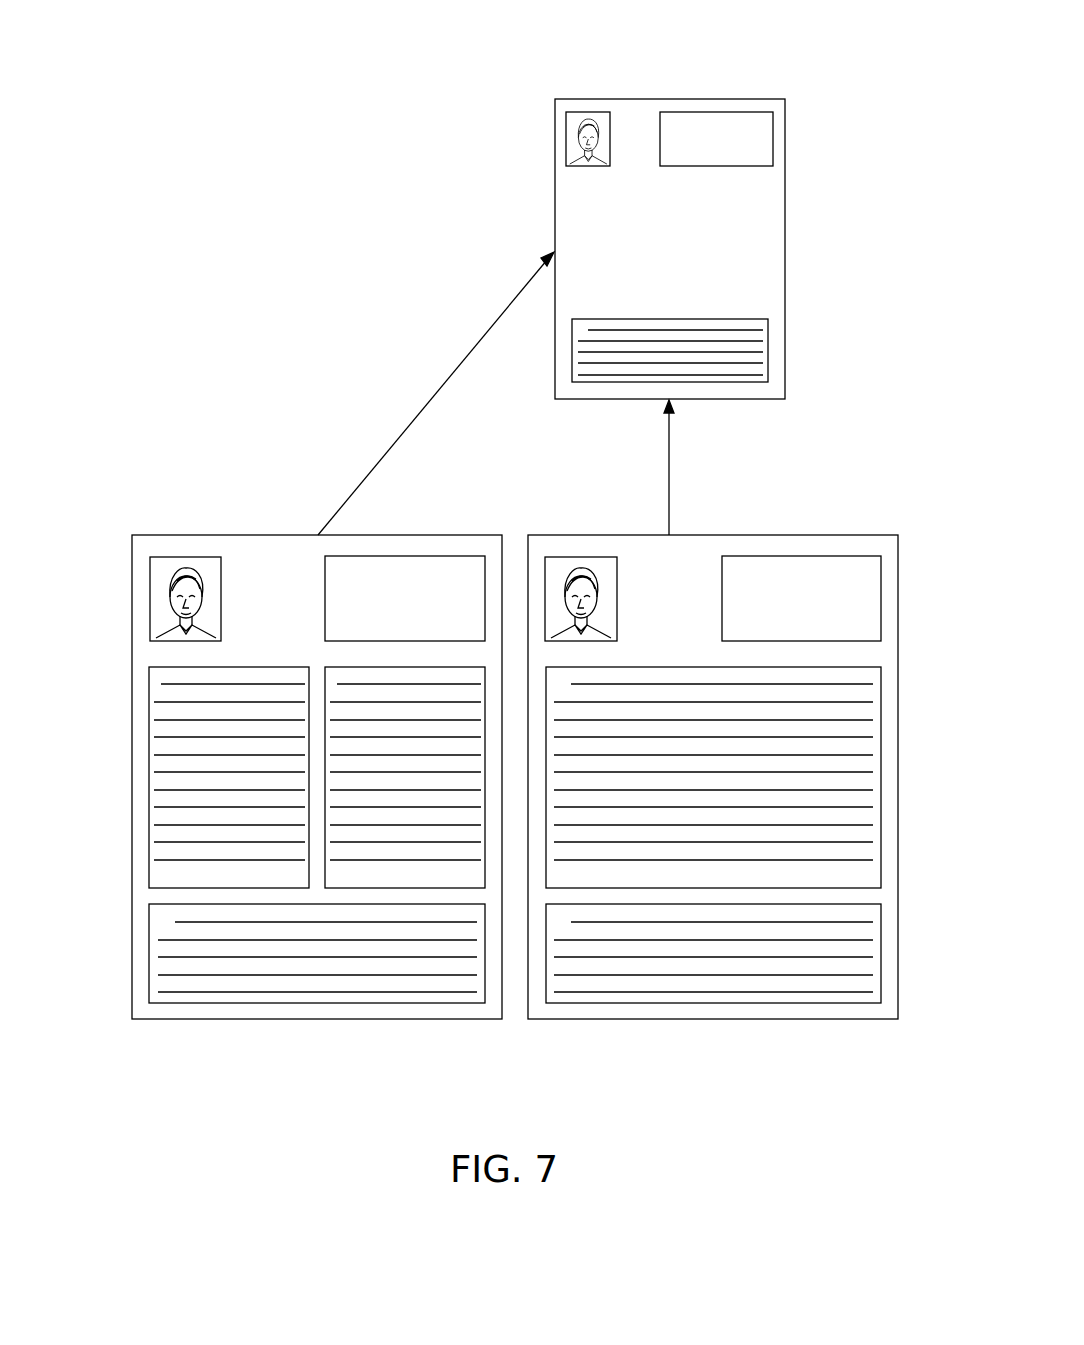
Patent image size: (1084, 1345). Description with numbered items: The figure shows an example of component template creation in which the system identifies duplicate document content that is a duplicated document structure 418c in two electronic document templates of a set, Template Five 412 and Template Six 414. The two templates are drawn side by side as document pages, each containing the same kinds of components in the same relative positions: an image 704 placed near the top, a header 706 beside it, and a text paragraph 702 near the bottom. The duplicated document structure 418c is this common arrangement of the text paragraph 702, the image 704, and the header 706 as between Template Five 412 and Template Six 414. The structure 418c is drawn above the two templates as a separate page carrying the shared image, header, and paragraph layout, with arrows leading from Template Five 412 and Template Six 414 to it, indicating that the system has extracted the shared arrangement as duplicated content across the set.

The duplicated document structure 418c is at (660, 101).
The Template Five 412 is at (343, 1020).
The Template Six 414 is at (802, 1020).
The text paragraph 702 is at (157, 975).
The image 704 is at (150, 618).
The header 706 is at (449, 556).